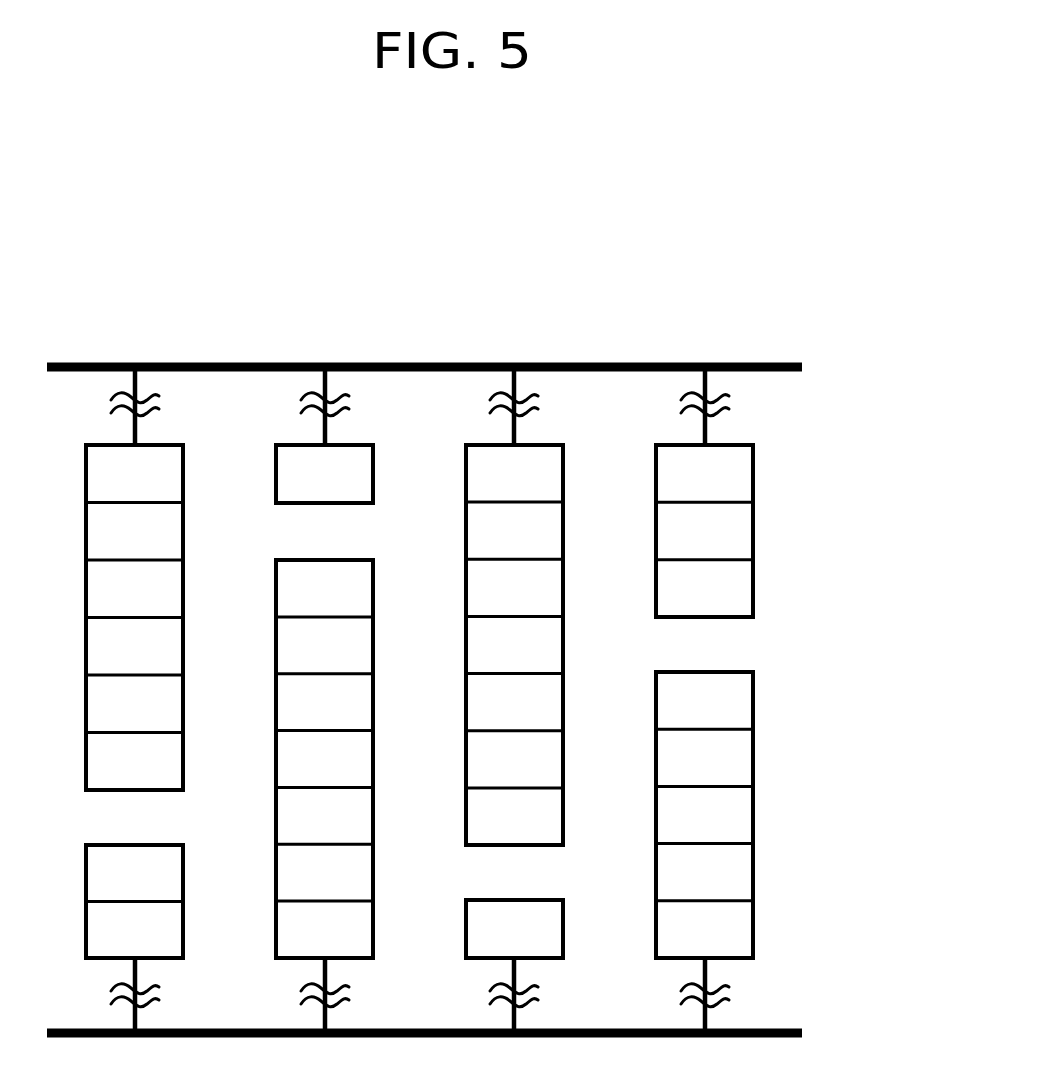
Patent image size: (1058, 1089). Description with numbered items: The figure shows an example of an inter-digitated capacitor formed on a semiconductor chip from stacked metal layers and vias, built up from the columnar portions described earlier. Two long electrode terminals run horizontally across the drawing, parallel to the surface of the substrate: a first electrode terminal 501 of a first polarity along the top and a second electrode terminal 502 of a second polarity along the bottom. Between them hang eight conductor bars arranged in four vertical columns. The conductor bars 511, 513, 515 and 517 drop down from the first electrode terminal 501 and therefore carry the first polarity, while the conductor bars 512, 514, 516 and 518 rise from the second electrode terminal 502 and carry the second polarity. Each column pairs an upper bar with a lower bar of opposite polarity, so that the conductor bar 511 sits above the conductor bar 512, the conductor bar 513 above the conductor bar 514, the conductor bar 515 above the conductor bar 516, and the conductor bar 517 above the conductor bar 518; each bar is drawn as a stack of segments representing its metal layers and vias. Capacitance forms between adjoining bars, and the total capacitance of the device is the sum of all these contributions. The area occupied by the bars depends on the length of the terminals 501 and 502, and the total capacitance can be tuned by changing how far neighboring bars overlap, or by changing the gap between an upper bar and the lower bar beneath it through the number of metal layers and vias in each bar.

The first electrode terminal 501 is at (802, 363).
The second electrode terminal 502 is at (802, 1028).
The conductor bar 511 is at (158, 445).
The conductor bar 512 is at (146, 845).
The conductor bar 513 is at (348, 445).
The conductor bar 514 is at (330, 558).
The conductor bar 515 is at (537, 445).
The conductor bar 516 is at (522, 900).
The conductor bar 517 is at (747, 445).
The conductor bar 518 is at (743, 672).